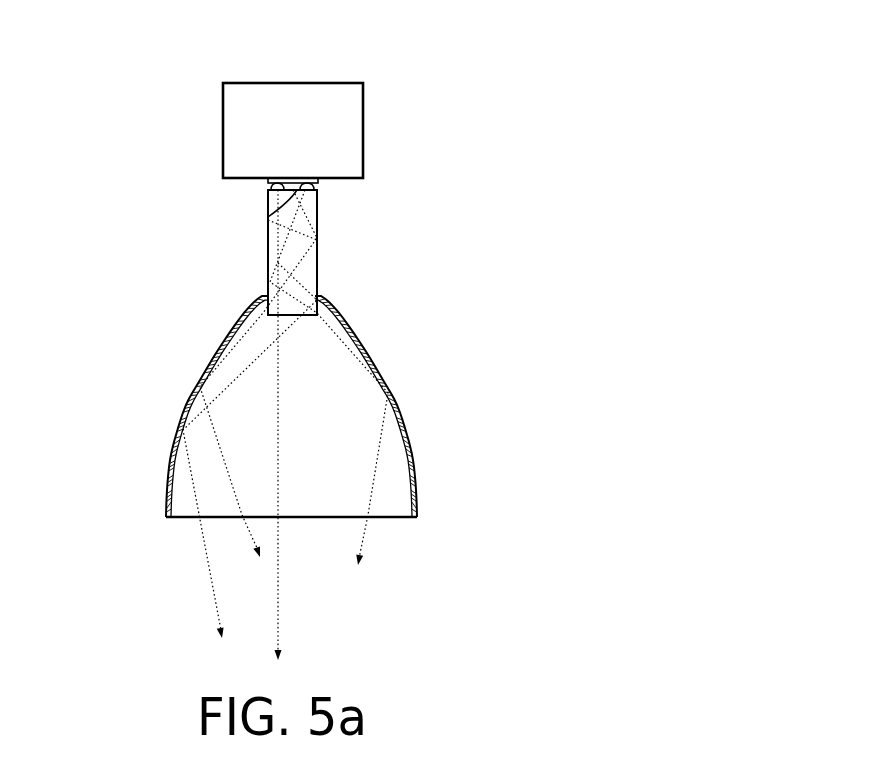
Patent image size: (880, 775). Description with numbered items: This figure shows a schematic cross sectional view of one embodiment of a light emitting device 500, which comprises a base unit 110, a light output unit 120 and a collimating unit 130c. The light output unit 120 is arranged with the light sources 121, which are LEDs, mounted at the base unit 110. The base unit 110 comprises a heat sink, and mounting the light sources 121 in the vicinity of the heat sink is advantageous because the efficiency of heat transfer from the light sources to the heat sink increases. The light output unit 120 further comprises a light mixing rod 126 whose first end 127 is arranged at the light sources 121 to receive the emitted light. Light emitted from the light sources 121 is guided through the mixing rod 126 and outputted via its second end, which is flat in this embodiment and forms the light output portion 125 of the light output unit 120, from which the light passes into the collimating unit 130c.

The light emitting device 500 is at (281, 330).
The base unit 110 is at (345, 123).
The light output unit 120 is at (302, 419).
The light sources 121 is at (274, 187).
The light mixing rod 126 is at (318, 260).
The first end 127 is at (268, 217).
The light output portion 125 is at (292, 318).
The collimating unit 130c is at (229, 430).